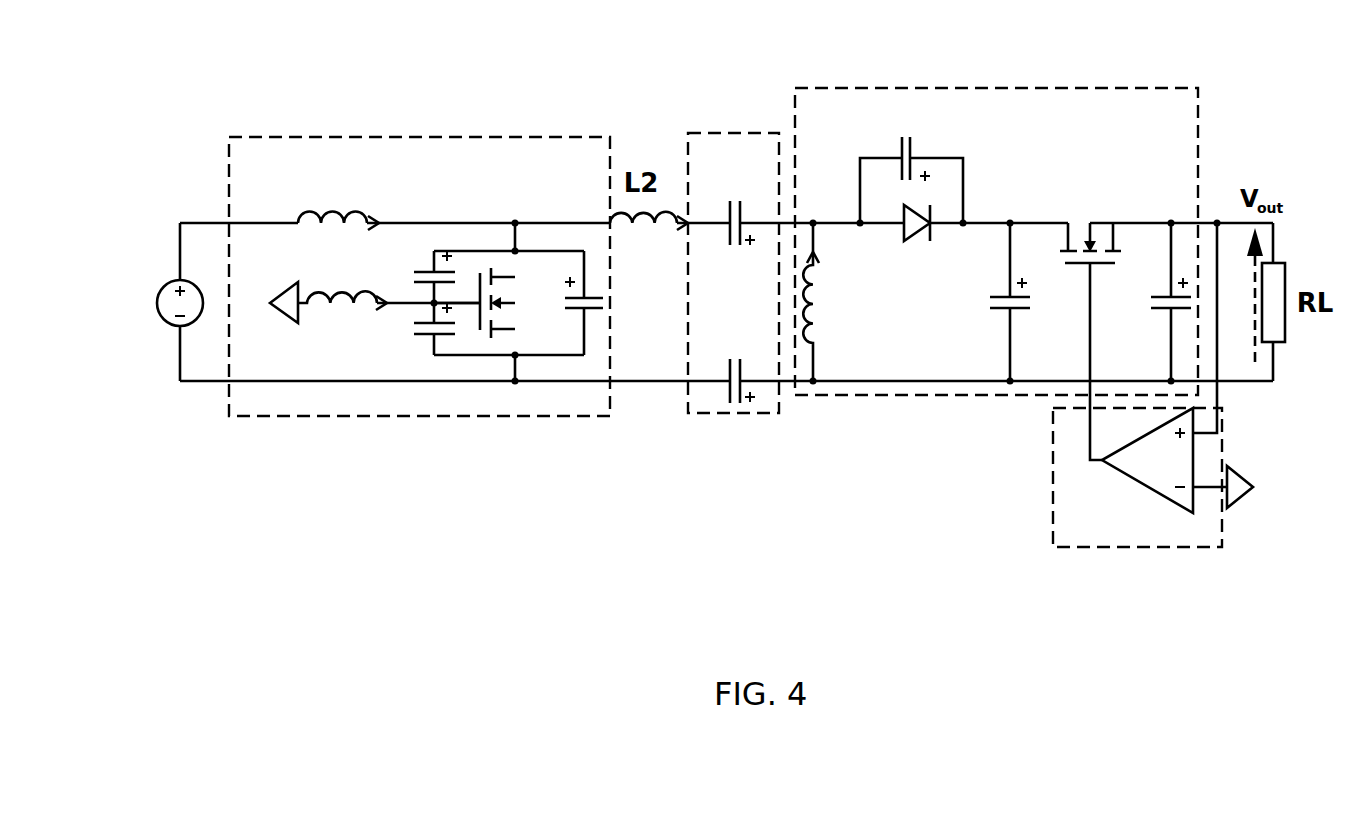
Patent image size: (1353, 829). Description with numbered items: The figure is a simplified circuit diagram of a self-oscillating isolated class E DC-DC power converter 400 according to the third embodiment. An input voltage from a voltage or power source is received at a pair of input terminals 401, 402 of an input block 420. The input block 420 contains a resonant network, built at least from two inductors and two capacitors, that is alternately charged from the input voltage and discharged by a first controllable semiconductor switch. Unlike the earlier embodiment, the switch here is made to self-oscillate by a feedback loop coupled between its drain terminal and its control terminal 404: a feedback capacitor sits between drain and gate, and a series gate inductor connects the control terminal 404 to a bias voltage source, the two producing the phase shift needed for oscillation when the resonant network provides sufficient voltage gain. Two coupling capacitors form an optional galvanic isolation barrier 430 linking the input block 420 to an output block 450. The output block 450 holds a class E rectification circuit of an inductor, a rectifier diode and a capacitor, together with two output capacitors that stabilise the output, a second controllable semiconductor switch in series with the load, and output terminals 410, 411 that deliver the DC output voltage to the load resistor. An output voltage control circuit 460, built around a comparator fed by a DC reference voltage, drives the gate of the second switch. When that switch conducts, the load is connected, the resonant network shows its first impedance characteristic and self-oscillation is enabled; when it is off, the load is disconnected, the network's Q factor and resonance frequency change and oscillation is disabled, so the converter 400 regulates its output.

The self-oscillating isolated class E DC-DC power converter 400 is at (228, 522).
The input terminal 401 is at (197, 222).
The input terminal 402 is at (182, 383).
The control terminal of switch S1 404 is at (475, 306).
The output terminal 410 is at (1240, 385).
The output terminal 411 is at (1217, 210).
The input block 420 is at (353, 133).
The galvanic isolation barrier 430 is at (730, 128).
The output block 450 is at (846, 84).
The output voltage control circuit 460 is at (1067, 553).